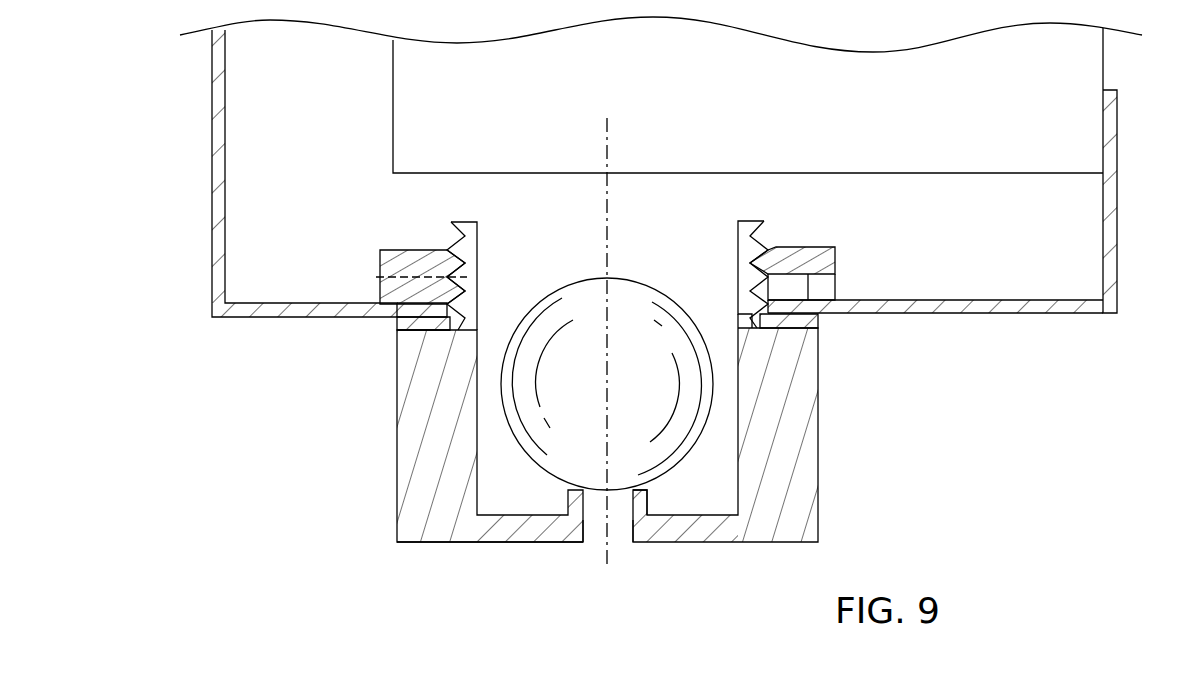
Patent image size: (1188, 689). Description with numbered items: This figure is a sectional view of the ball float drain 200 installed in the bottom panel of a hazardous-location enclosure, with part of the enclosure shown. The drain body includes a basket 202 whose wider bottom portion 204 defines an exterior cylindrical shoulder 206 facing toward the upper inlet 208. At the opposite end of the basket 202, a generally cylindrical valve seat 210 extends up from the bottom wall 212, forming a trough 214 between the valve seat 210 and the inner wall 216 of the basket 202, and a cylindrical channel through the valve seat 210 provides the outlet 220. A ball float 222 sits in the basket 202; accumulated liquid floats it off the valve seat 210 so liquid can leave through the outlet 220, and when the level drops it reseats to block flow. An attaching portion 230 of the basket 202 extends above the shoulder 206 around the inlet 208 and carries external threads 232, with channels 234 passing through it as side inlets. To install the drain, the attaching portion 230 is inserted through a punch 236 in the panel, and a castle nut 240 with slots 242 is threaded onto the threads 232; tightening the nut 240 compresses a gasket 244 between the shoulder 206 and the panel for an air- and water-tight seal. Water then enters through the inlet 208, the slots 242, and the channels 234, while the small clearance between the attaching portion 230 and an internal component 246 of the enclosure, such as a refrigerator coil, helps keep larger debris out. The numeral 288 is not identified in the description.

The ball float drain 200 is at (641, 454).
The basket 202 is at (836, 359).
The wider bottom portion 204 is at (831, 509).
The exterior cylindrical shoulder 206 is at (446, 338).
The upper inlet 208 is at (659, 249).
The valve seat 210 is at (660, 497).
The bottom wall 212 is at (512, 543).
The trough 214 is at (519, 504).
The inner wall 216 is at (481, 268).
The outlet 220 is at (619, 534).
The ball float 222 is at (590, 277).
The attaching portion 230 is at (418, 232).
The external threads 232 is at (459, 243).
The channels 234 is at (724, 278).
The punch 236 is at (769, 297).
The castle nut 240 is at (823, 247).
The slots 242 is at (847, 285).
The gasket 244 is at (422, 331).
The internal component 246 is at (1103, 60).
The tank bottom flange 288 is at (1025, 313).